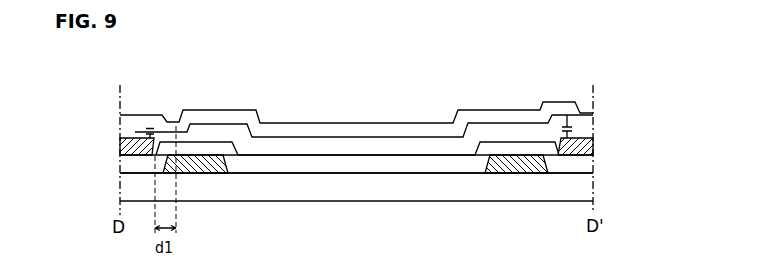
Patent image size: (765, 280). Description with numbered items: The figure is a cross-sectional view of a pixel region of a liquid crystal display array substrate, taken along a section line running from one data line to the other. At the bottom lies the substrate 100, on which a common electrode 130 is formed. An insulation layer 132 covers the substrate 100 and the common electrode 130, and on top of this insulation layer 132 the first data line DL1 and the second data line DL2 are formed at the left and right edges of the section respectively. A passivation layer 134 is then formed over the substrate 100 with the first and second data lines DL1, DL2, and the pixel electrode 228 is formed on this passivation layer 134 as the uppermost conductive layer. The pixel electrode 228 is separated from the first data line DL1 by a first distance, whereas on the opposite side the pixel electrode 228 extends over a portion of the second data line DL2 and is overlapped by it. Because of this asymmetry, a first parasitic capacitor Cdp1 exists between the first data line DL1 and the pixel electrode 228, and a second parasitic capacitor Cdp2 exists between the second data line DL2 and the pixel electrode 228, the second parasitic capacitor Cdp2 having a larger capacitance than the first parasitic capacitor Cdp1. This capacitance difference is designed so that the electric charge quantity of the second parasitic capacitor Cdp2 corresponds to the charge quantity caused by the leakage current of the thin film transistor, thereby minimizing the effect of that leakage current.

The substrate 100 is at (588, 190).
The common electrode 130 is at (210, 173).
The insulation layer 132 is at (588, 168).
The passivation layer 134 is at (588, 125).
The pixel electrode 228 is at (482, 115).
The first data line DL1 is at (122, 145).
The second data line DL2 is at (588, 150).
The first parasitic capacitor Cdp1 is at (148, 116).
The second parasitic capacitor Cdp2 is at (564, 109).